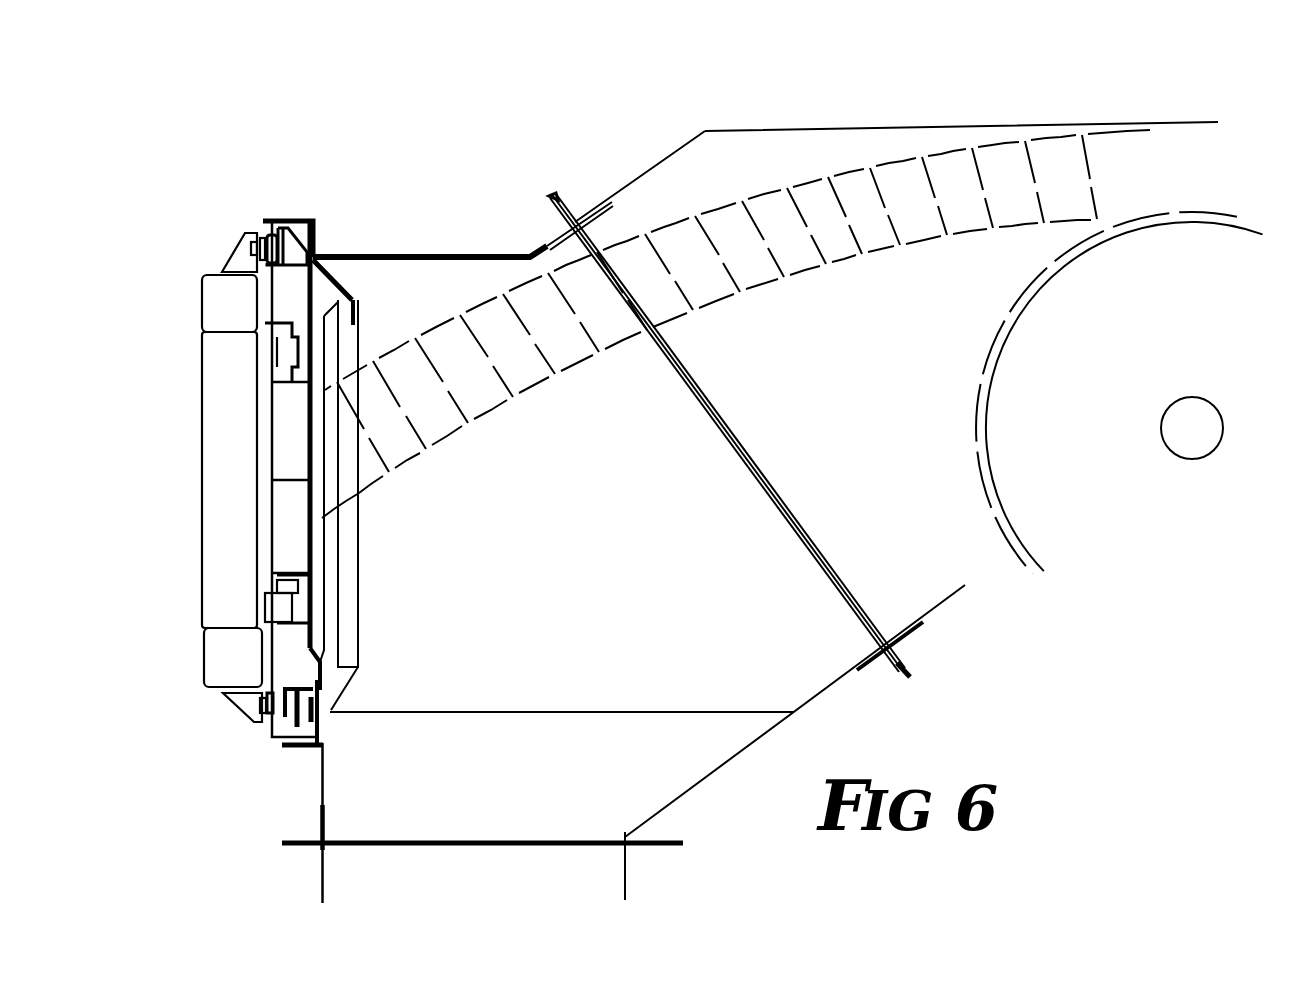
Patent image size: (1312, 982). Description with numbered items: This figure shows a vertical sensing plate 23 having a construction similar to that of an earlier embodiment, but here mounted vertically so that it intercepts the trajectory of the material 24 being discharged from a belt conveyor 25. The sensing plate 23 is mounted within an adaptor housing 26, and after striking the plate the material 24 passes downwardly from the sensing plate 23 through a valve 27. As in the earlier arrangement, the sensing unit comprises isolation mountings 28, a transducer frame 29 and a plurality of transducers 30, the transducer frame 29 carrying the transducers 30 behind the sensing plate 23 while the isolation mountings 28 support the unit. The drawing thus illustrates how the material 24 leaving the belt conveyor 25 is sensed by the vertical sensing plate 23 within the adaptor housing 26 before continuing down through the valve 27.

The vertical sensing plate 23 is at (322, 573).
The material 24 is at (748, 290).
The belt conveyor 25 is at (973, 463).
The adaptor housing 26 is at (983, 125).
The valve 27 is at (318, 873).
The isolation mountings 28 is at (253, 239).
The transducer frame 29 is at (215, 315).
The transducers 30 is at (272, 353).